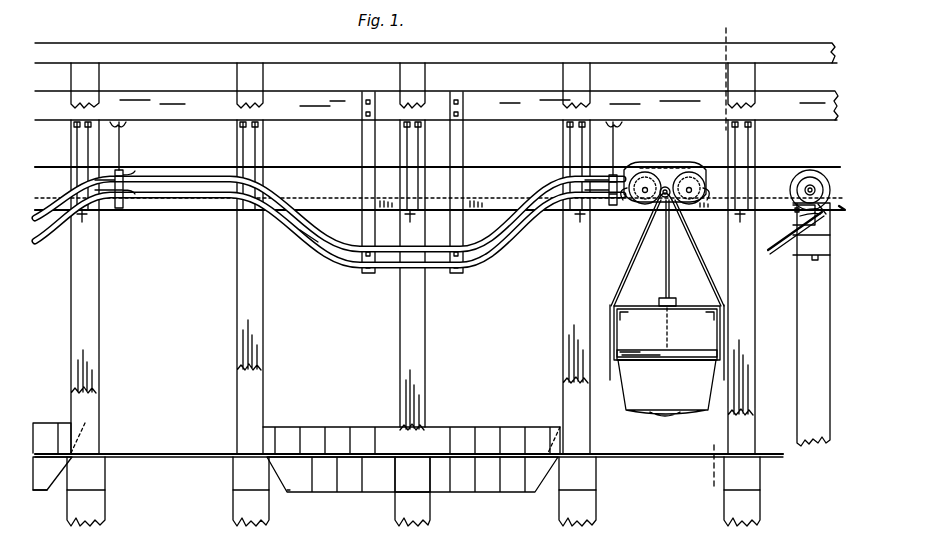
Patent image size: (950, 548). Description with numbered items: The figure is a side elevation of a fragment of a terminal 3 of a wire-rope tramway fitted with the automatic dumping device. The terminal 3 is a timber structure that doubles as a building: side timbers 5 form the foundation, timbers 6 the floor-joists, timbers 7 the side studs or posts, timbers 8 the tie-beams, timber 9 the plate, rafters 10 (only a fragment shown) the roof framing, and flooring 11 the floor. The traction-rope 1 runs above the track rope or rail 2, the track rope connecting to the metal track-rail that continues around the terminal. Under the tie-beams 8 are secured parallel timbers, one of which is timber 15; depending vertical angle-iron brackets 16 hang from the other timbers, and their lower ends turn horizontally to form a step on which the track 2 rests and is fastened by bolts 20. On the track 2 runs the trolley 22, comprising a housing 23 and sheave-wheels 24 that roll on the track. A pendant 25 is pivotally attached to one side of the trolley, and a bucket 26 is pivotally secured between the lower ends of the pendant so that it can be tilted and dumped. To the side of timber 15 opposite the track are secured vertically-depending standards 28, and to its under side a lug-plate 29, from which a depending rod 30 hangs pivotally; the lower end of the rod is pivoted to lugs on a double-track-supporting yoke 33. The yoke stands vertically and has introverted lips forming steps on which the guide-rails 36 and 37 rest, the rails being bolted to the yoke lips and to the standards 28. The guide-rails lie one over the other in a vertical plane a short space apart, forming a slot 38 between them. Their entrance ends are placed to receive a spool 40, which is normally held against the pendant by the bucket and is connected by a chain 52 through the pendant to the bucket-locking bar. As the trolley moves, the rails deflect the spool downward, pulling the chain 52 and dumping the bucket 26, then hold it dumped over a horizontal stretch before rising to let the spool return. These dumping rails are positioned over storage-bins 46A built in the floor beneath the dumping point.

The traction-rope 1 is at (509, 170).
The track rope or rail 2 is at (718, 261).
The terminal 3 is at (311, 144).
The side timbers 5 is at (100, 500).
The floor-joists 6 is at (105, 477).
The side studs or posts 7 is at (92, 412).
The tie-beams 8 is at (262, 75).
The plate 9 is at (214, 48).
The rafters 10 is at (214, 547).
The flooring 11 is at (182, 453).
The timber 15 is at (480, 98).
The angle-iron brackets 16 is at (288, 156).
The bolts 20 is at (405, 214).
The trolley 22 is at (678, 162).
The housing 23 is at (654, 164).
The sheave-wheels 24 is at (714, 172).
The pendant 25 is at (622, 282).
The bucket 26 is at (667, 360).
The standards 28 is at (362, 182).
The lug-plate 29 is at (128, 125).
The depending rod 30 is at (122, 152).
The double-track-supporting yoke 33 is at (118, 210).
The guide-rail 36 is at (60, 200).
The guide-rail 37 is at (44, 234).
The slot 38 is at (314, 242).
The spool 40 is at (660, 204).
The storage-bins 46A is at (350, 426).
The chain 52 is at (672, 335).